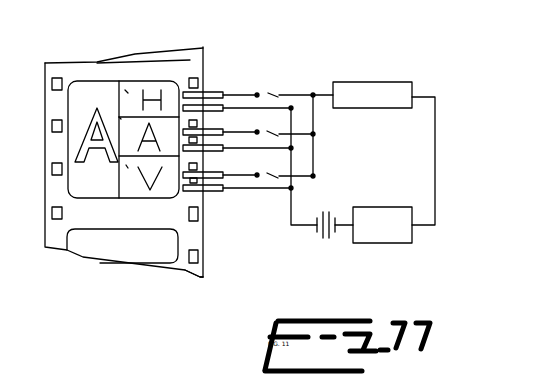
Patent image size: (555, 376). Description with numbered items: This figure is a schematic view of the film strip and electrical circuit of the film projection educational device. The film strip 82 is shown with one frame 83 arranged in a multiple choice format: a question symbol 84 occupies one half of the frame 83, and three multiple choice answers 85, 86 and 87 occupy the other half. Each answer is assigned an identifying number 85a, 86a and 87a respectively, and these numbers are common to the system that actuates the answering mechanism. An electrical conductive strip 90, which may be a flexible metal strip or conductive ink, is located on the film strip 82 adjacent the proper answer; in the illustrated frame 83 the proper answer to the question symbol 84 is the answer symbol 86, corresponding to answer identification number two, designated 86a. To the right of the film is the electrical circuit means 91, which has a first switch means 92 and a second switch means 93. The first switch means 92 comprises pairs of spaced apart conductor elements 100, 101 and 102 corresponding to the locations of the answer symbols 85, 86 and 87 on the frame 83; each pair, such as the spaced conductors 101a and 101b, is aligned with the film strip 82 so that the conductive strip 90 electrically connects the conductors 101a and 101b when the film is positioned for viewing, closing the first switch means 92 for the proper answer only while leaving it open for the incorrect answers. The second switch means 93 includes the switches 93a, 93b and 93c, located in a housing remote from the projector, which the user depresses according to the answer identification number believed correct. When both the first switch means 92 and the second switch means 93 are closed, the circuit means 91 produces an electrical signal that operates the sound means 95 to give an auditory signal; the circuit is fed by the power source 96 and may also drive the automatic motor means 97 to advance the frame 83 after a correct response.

The film strip 82 is at (203, 47).
The frame 83 is at (82, 190).
The question symbol 84 is at (81, 152).
The answer symbol 85 is at (157, 90).
The answer identifying number 85a is at (126, 92).
The answer symbol 86 is at (140, 150).
The answer identifying number 86a is at (119, 117).
The answer symbol 87 is at (140, 170).
The answer identifying number 87a is at (130, 165).
The electrical conductive strip 90 is at (216, 117).
The electrical circuit means 91 is at (360, 48).
The first switch means 92 is at (208, 277).
The second switch means 93 is at (258, 64).
The switch button 93a is at (266, 84).
The switch button 93b is at (284, 140).
The switch button 93c is at (270, 181).
The sound means 95 is at (405, 66).
The power source 96 is at (318, 228).
The automatic motor means 97 is at (394, 207).
The pair of spaced apart conductor elements 100 is at (224, 187).
The pair of spaced apart conductor elements 101 is at (226, 139).
The spaced conductor 101a is at (222, 129).
The spaced conductor 101b is at (212, 148).
The pair of spaced apart conductor elements 102 is at (218, 90).